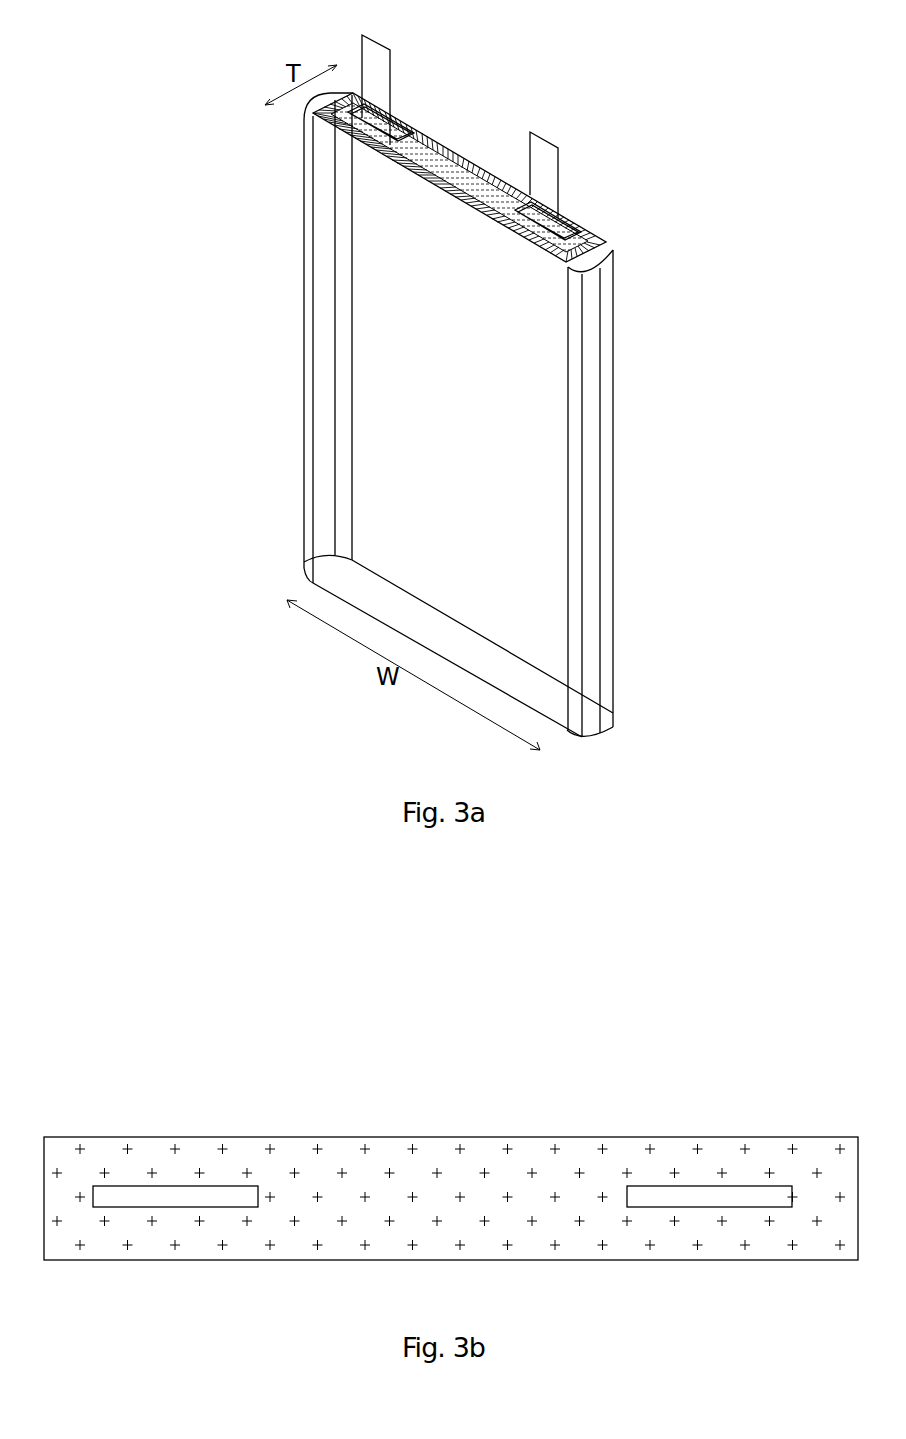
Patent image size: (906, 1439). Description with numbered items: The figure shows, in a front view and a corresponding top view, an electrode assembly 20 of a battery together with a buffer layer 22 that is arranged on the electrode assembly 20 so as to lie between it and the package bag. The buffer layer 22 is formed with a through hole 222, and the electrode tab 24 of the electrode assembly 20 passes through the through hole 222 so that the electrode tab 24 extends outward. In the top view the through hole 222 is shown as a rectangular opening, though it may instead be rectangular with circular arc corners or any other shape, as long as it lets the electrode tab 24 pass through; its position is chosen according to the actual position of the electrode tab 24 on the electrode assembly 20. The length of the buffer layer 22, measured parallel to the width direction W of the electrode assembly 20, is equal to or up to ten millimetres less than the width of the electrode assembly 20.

In FIG. 3a, the electrode assembly 20 is at (345, 42).
In FIG. 3a, the buffer layer 22 is at (462, 150).
In FIG. 3b, the buffer layer 22 is at (98, 1137).
In FIG. 3a, the through hole 222 is at (400, 132).
In FIG. 3b, the through hole 222 is at (218, 1185).
In FIG. 3a, the electrode tab 24 is at (560, 187).